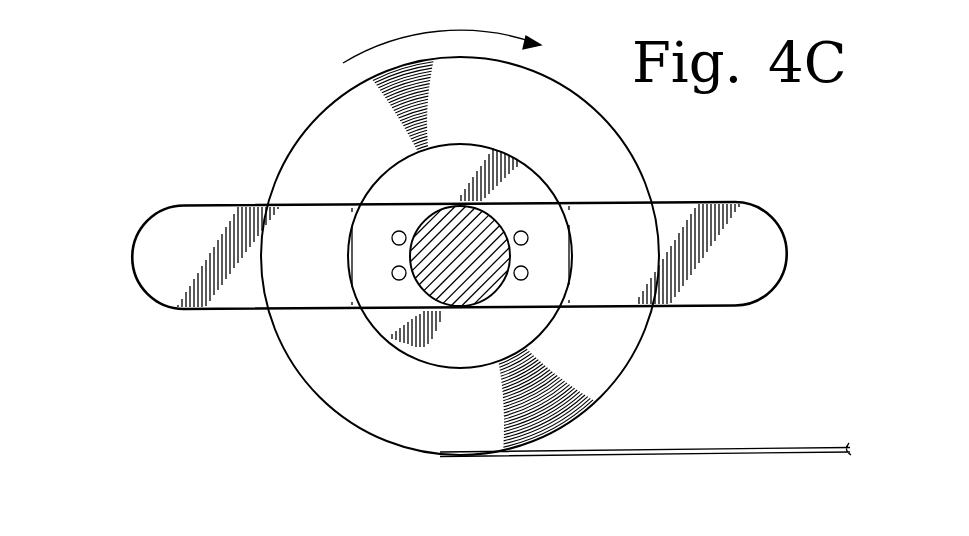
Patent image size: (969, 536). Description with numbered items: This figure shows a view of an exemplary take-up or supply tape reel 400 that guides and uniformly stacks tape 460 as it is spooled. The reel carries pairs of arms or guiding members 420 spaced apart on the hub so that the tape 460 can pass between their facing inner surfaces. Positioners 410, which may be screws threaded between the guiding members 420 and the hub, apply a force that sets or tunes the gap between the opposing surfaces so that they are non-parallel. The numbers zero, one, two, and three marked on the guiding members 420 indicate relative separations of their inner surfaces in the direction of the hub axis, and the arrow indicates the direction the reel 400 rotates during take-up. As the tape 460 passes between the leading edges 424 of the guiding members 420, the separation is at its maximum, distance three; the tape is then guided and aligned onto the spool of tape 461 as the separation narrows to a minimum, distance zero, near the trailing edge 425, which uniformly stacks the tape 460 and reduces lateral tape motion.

The tape reel 400 is at (225, 87).
The positioners 410 is at (393, 269).
The guiding members 420 is at (170, 260).
The leading edges 424 is at (204, 205).
The trailing edge 425 is at (197, 309).
The tape 460 is at (722, 450).
The spool of tape 461 is at (620, 347).